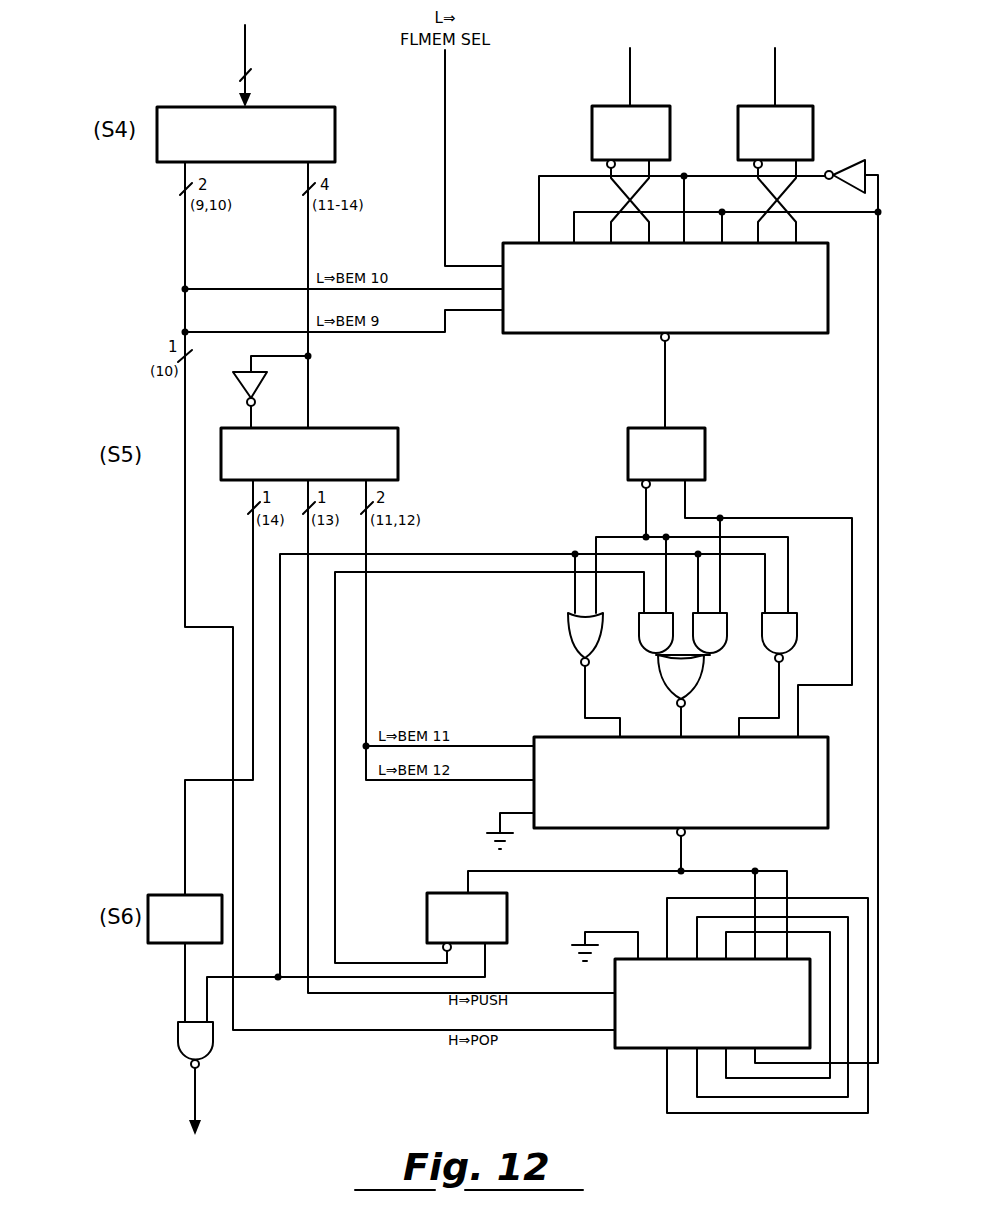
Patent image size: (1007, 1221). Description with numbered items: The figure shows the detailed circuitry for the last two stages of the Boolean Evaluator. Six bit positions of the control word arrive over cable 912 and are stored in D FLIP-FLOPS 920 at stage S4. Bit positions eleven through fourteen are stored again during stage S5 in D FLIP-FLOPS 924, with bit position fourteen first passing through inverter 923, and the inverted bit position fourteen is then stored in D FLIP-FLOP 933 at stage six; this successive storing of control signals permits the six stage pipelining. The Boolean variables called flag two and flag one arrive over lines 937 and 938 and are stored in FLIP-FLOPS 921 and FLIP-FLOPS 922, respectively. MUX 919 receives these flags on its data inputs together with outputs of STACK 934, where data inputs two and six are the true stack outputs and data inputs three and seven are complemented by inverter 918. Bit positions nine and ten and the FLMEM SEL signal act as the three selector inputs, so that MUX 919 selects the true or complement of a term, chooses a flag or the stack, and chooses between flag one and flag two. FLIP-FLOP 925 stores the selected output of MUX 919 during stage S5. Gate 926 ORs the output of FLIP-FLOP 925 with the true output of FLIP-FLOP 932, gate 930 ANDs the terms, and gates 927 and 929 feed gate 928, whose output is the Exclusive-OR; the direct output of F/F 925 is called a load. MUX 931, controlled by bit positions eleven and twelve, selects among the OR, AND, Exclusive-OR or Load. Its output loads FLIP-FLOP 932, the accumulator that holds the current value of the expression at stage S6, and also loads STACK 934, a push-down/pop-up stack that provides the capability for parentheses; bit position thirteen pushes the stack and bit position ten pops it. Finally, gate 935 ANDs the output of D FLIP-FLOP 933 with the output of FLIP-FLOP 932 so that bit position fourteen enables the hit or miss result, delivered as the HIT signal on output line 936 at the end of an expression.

The cable 912 is at (248, 52).
The inverter 918 is at (852, 167).
The MUX 919 is at (521, 243).
The D FLIP-FLOPS 920 is at (200, 107).
The FLIP-FLOPS 921 is at (592, 124).
The FLIP-FLOPS 922 is at (813, 118).
The inverter 923 is at (240, 376).
The D FLIP-FLOPS 924 is at (398, 436).
The FLIP-FLOP 925 is at (705, 438).
The gate 926 is at (567, 637).
The gate 927 is at (637, 638).
The gate 928 is at (667, 673).
The gate 929 is at (730, 638).
The gate 930 is at (798, 638).
The MUX 931 is at (830, 742).
The FLIP-FLOP 932 is at (449, 893).
The D FLIP-FLOP 933 is at (166, 895).
The STACK 934 is at (628, 1050).
The gate 935 is at (213, 1052).
The output line 936 is at (196, 1102).
The line 937 is at (630, 66).
The line 938 is at (775, 66).